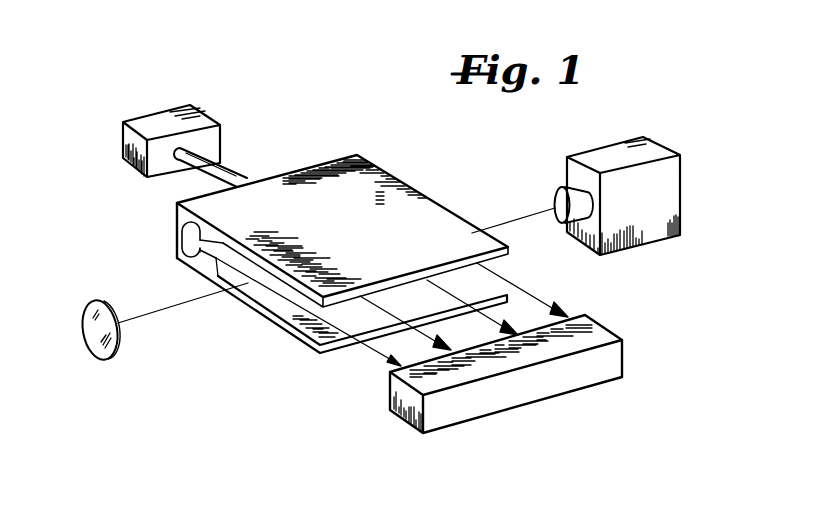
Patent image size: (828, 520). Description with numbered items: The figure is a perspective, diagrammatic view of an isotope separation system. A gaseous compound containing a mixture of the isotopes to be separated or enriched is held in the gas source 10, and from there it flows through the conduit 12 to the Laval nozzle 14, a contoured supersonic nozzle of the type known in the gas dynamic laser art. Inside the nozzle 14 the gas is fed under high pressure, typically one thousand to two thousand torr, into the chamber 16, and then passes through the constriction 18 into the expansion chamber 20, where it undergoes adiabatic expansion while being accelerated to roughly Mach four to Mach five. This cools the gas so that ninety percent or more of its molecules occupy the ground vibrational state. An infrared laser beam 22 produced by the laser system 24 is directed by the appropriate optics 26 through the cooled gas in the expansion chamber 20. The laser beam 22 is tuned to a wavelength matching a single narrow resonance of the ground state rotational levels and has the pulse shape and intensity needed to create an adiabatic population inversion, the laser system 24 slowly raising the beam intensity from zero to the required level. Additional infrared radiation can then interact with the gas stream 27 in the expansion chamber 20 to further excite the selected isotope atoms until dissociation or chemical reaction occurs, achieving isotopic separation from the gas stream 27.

The gas source 10 is at (125, 121).
The conduit 12 is at (234, 172).
The Laval nozzle 14 is at (416, 185).
The chamber 16 is at (181, 228).
The constriction 18 is at (188, 245).
The expansion chamber 20 is at (228, 269).
The laser beam 22 is at (512, 219).
The laser system 24 is at (617, 142).
The optics 26 is at (95, 348).
The gas stream 27 is at (350, 375).